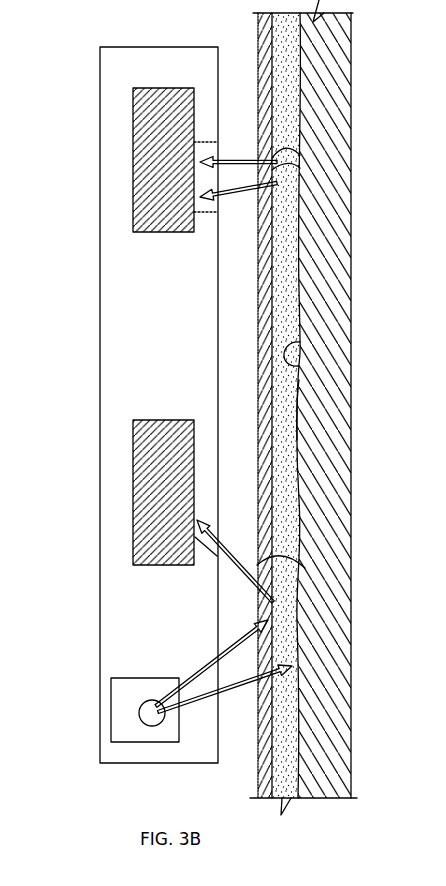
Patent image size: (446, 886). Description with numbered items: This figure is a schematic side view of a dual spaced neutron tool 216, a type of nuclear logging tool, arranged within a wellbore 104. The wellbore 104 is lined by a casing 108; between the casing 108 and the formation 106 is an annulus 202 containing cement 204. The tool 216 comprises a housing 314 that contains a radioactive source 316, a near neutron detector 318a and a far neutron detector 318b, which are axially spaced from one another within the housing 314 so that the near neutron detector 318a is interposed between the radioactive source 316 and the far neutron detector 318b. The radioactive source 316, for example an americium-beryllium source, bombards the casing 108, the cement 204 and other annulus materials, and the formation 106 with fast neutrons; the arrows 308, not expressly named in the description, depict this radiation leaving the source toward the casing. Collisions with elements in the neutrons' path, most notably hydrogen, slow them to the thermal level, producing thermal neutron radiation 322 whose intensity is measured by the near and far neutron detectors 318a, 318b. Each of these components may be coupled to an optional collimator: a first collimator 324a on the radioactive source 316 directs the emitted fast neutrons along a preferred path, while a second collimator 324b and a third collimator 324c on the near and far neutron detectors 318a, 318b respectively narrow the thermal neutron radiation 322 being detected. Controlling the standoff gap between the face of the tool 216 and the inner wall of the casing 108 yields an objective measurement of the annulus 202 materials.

The wellbore 104 is at (300, 88).
The formation 106 is at (342, 233).
The casing 108 is at (300, 292).
The annulus 202 is at (300, 345).
The cement 204 is at (300, 405).
The dual spaced neutron tool 216 is at (147, 394).
The acoustic signals 308 is at (268, 632).
The housing 314 is at (100, 315).
The radioactive source 316 is at (111, 705).
The near neutron detector 318a is at (133, 505).
The far neutron detector 318b is at (133, 172).
The thermal neutron radiation 322 is at (300, 158).
The first collimator 324a is at (182, 672).
The second collimator 324b is at (208, 572).
The third collimator 324c is at (206, 215).